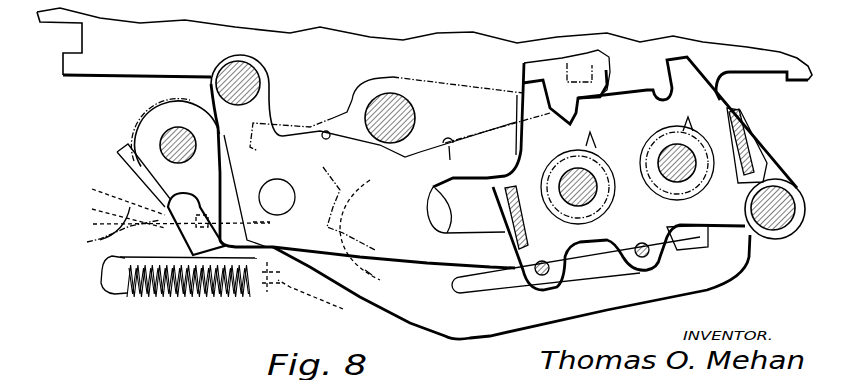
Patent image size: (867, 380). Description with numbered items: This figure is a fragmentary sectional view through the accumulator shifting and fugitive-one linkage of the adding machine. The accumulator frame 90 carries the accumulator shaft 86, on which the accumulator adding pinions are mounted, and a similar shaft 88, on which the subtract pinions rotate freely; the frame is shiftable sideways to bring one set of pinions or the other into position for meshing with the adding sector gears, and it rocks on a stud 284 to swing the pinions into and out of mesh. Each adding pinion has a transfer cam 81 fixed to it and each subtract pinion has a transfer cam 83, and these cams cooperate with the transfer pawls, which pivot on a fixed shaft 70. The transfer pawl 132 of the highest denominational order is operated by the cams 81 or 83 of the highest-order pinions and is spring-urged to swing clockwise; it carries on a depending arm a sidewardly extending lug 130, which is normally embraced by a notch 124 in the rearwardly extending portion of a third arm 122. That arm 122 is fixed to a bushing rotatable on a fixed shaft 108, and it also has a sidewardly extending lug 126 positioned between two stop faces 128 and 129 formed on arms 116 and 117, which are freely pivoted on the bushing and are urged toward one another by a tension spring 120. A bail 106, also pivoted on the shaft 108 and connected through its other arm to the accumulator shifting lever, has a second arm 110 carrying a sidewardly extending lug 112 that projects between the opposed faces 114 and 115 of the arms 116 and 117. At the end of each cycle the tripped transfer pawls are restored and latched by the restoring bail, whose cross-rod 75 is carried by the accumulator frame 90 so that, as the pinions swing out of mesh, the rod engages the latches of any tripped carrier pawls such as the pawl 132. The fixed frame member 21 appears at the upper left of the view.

The frame bracket 21 is at (72, 62).
The fixed shaft 70 is at (388, 103).
The cross-rod 75 is at (262, 75).
The transfer cam 81 is at (563, 157).
The transfer cam 83 is at (673, 133).
The accumulator shaft 86 is at (570, 185).
The shaft 88 is at (670, 183).
The accumulator frame 90 is at (758, 141).
The bail 106 is at (116, 168).
The fixed shaft 108 is at (168, 145).
The second arm 110 is at (102, 236).
The lug 112 is at (215, 250).
The opposed face 114 is at (158, 224).
The opposed face 115 is at (267, 292).
The arm 116 is at (100, 290).
The arm 117 is at (315, 306).
The tension spring 120 is at (168, 295).
The third arm 122 is at (331, 205).
The notch 124 is at (357, 187).
The lug 126 is at (106, 212).
The stop face 128 is at (107, 196).
The stop face 129 is at (281, 224).
The lug 130 is at (372, 275).
The transfer pawl 132 is at (450, 159).
The stud 284 is at (275, 195).